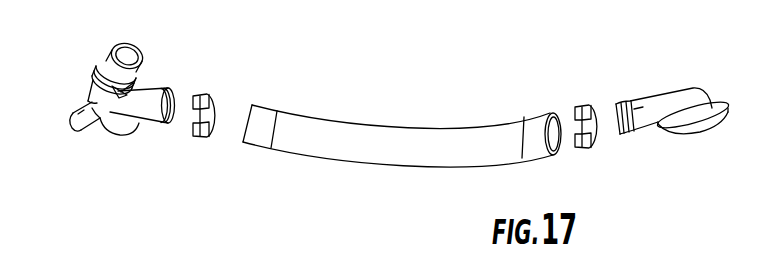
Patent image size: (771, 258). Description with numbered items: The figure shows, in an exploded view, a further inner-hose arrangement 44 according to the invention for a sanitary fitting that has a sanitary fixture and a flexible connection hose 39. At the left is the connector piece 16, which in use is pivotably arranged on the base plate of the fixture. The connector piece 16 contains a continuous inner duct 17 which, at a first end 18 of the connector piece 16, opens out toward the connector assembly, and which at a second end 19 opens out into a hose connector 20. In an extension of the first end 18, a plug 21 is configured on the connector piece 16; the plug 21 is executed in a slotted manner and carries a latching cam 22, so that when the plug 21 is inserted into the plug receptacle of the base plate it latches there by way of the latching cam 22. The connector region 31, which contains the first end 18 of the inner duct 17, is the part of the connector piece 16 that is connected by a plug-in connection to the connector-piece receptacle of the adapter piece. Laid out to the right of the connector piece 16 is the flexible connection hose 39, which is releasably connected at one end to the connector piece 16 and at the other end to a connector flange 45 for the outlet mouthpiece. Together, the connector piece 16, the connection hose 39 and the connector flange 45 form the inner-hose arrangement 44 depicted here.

The connector piece 16 is at (117, 107).
The inner duct 17 is at (130, 53).
The first end 18 is at (96, 43).
The second end 19 is at (170, 78).
The hose connector 20 is at (205, 162).
The plug 21 is at (76, 108).
The latching cam 22 is at (93, 124).
The connector region 31 is at (98, 75).
The connection hose 39 is at (392, 155).
The inner-hose arrangement 44 is at (492, 72).
The connector flange 45 is at (674, 131).